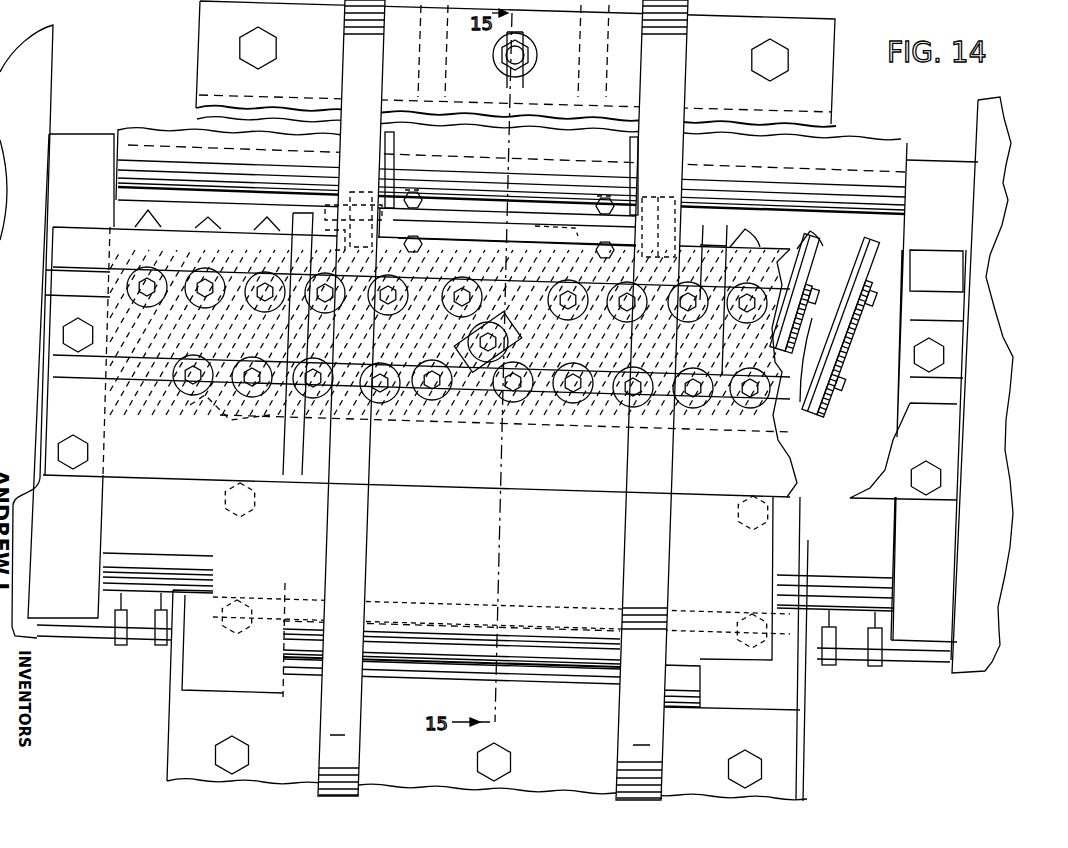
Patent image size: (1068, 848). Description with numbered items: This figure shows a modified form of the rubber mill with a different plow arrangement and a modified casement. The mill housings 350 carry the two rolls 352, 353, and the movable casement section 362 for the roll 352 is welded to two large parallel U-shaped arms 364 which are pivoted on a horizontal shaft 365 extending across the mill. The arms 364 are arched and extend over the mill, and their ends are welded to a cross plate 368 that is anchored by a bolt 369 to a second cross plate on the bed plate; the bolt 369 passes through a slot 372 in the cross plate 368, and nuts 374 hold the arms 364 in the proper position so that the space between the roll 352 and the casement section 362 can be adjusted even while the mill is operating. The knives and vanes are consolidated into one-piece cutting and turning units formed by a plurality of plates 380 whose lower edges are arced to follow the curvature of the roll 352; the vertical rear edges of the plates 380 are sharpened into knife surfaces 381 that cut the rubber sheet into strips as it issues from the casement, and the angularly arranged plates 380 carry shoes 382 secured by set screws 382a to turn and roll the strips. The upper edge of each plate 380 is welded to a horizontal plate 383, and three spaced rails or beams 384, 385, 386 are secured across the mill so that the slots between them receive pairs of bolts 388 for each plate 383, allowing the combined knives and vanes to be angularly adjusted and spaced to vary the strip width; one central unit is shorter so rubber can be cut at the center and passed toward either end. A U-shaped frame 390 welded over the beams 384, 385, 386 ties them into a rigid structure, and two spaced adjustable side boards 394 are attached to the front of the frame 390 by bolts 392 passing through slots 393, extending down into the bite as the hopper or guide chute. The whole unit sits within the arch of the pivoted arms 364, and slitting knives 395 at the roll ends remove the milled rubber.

The mill housings 350 is at (100, 117).
The roll 352 is at (108, 536).
The roll 353 is at (170, 117).
The movable casement section 362 is at (772, 549).
The U-shaped arms 364 is at (682, 100).
The horizontal shaft 365 is at (283, 658).
The cross plate 368 is at (528, 96).
The bolt 369 is at (530, 40).
The slot 372 is at (522, 84).
The nuts 374 is at (533, 52).
The plates 380 is at (168, 338).
The knife surfaces 381 is at (222, 432).
The shoes 382 is at (262, 226).
The set screws 382a is at (888, 302).
The horizontal plate 383 is at (192, 408).
The rail or beam 384 is at (880, 458).
The rail or beam 385 is at (950, 366).
The rail or beam 386 is at (953, 268).
The bolts 388 is at (262, 262).
The U-shaped frame 390 is at (477, 232).
The bolts 392 is at (362, 193).
The slots 393 is at (328, 209).
The side boards 394 is at (395, 148).
The slitting knives 395 is at (130, 642).